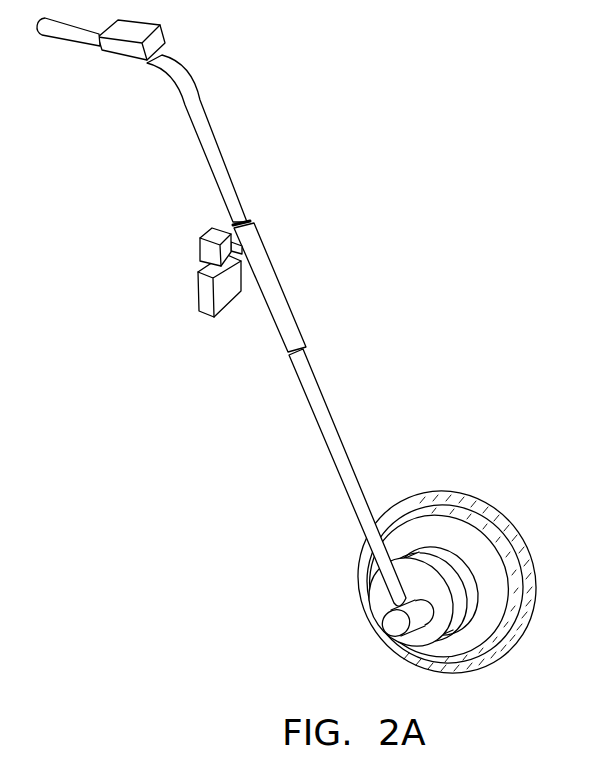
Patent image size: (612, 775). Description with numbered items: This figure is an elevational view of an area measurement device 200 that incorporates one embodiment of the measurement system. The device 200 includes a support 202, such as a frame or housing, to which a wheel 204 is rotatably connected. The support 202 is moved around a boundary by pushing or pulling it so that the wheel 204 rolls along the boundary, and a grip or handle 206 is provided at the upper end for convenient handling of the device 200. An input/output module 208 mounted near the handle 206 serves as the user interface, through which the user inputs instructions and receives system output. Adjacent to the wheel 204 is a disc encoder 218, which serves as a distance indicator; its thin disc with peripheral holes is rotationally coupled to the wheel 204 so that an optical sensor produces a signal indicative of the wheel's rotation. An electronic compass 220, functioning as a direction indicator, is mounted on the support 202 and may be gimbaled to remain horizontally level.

The area measurement device 200 is at (324, 354).
The support 202 is at (318, 373).
The wheel 204 is at (492, 508).
The grip or handle 206 is at (65, 45).
The input/output module 208 is at (173, 37).
The disc encoder 218 is at (418, 643).
The electronic compass 220 is at (205, 320).